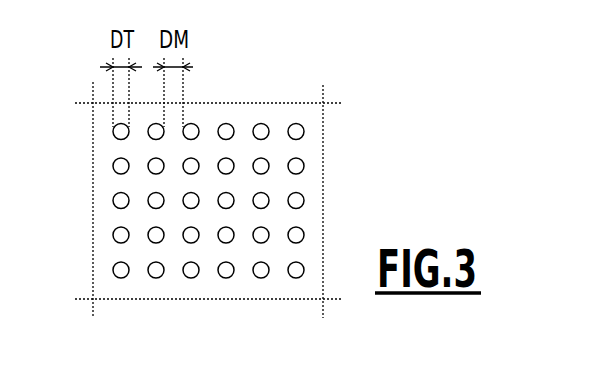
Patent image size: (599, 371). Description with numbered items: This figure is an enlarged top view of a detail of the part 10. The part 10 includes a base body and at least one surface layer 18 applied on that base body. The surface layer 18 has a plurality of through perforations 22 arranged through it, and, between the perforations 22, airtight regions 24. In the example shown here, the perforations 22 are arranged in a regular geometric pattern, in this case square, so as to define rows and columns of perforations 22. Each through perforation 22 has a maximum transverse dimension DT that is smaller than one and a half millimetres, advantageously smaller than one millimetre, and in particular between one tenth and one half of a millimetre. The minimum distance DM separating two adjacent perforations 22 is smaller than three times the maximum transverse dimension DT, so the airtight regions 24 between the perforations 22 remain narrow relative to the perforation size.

The part 10 is at (387, 124).
The surface layer 18 is at (107, 183).
The through perforations 22 is at (297, 128).
The airtight regions 24 is at (287, 147).